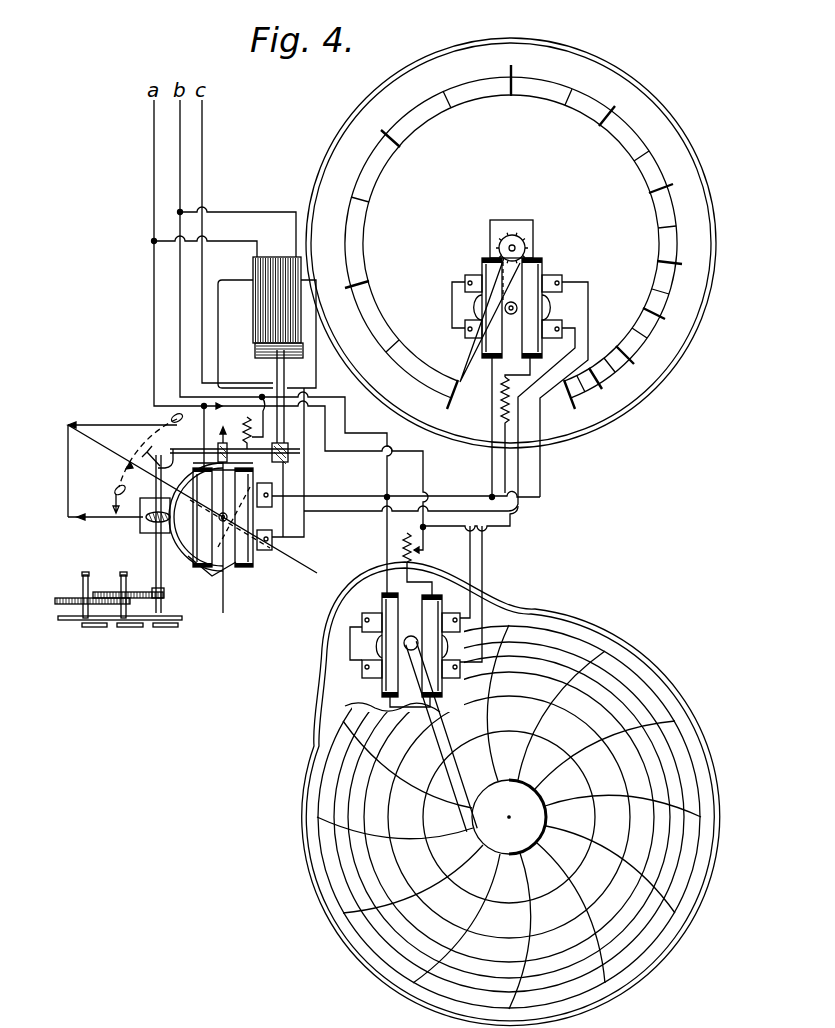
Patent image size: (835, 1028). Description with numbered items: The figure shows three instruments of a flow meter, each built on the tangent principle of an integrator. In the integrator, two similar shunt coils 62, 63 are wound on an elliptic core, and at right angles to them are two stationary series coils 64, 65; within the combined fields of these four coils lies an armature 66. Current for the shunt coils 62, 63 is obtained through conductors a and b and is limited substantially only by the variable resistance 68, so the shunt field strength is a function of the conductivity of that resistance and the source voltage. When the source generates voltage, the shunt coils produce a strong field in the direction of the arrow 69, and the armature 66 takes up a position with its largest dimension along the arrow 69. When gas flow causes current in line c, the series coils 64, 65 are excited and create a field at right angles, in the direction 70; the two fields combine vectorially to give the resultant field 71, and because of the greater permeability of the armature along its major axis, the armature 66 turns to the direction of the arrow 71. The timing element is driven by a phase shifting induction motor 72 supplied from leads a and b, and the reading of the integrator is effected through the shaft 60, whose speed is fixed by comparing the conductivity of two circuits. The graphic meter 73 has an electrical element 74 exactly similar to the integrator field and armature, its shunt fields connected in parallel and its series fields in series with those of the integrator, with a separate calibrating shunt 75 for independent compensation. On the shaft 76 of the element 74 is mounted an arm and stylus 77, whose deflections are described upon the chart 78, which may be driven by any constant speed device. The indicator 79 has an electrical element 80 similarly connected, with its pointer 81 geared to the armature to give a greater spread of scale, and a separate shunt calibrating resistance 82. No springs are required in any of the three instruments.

The shaft 60 is at (156, 566).
The shunt coil 62 is at (199, 568).
The shunt coil 63 is at (250, 570).
The series coil 64 is at (148, 462).
The series coil 65 is at (170, 541).
The armature 66 is at (263, 551).
The variable resistance 68 is at (251, 423).
The arrow 69 is at (90, 521).
The direction arrow 70 is at (229, 471).
The resultant field arrow 71 is at (178, 493).
The phase shifting induction motor 72 is at (278, 256).
The graphic meter 73 is at (588, 627).
The electrical element 74 is at (350, 650).
The calibrating shunt 75 is at (429, 547).
The shaft 76 is at (404, 646).
The arm and stylus 77 is at (421, 692).
The chart 78 is at (355, 847).
The indicator 79 is at (718, 262).
The electrical element 80 is at (546, 270).
The pointer 81 is at (465, 358).
The shunt calibrating resistance 82 is at (500, 400).